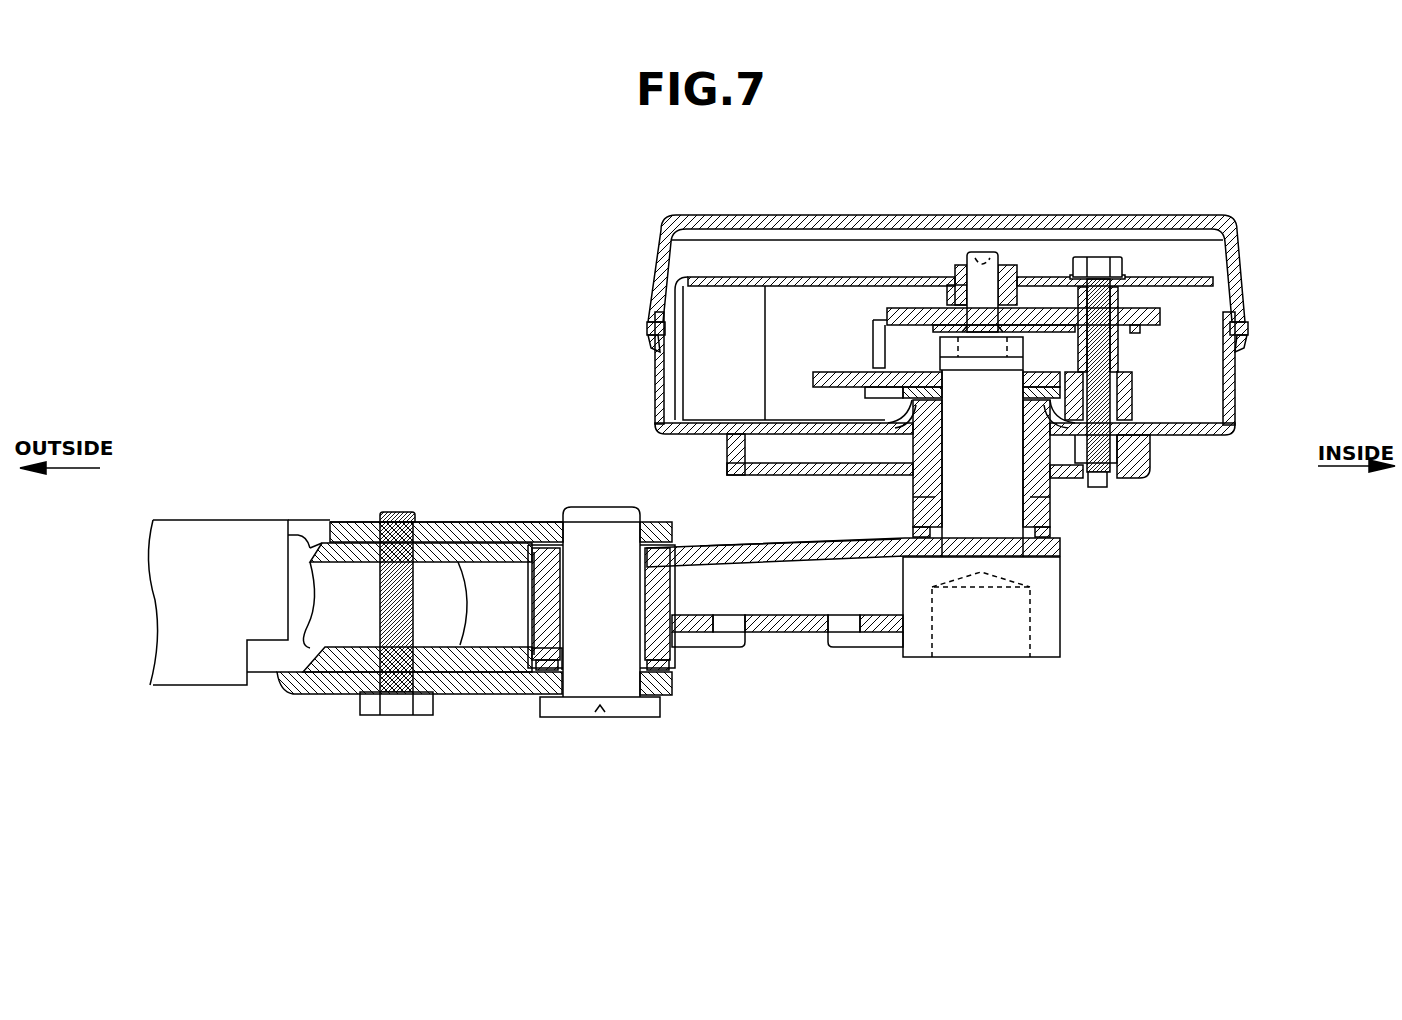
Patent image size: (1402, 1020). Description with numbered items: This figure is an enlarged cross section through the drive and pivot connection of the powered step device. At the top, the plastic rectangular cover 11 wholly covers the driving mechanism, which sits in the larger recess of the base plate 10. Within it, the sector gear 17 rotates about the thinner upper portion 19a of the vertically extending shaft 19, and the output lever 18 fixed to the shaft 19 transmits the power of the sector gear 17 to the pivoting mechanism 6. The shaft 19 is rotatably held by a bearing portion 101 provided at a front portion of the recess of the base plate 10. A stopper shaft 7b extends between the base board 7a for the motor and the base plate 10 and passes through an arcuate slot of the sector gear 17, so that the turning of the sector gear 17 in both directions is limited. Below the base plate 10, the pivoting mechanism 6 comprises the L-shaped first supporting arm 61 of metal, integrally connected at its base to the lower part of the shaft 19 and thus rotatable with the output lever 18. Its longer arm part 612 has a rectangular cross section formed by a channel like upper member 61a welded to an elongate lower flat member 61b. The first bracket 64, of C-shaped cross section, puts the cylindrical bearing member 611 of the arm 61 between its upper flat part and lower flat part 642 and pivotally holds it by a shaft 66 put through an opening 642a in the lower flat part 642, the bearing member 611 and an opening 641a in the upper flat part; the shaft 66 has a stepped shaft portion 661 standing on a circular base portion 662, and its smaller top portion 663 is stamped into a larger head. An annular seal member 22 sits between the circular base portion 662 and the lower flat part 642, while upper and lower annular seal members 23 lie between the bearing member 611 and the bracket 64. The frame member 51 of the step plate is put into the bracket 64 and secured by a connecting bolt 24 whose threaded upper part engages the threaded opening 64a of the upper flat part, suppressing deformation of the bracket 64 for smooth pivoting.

The pivoting mechanism 6 is at (616, 460).
The base board 7a is at (1187, 277).
The stopper shaft 7b is at (1118, 352).
The base plate 10 is at (1237, 402).
The plastic rectangular cover 11 is at (1084, 215).
The sector gear 17 is at (905, 308).
The output lever 18 is at (828, 372).
The shaft 19 is at (1052, 497).
The thinner upper portion 19a is at (1020, 277).
The bearing portion 101 is at (1052, 518).
The annular seal member 22 is at (538, 700).
The annular seal members 23 is at (528, 667).
The connecting bolt 24 is at (390, 715).
The frame member 51 is at (347, 690).
The first supporting arm 61 is at (840, 538).
The channel like upper member 61a is at (800, 542).
The elongate lower flat member 61b is at (800, 632).
The first bracket 64 is at (438, 522).
The threaded opening 64a is at (392, 512).
The shaft 66 is at (676, 707).
The cylindrical bearing member 611 is at (532, 622).
The longer arm part 612 is at (728, 548).
The opening 641a is at (623, 522).
The lower flat part 642 is at (450, 690).
The opening 642a is at (632, 683).
The stepped shaft portion 661 is at (557, 583).
The circular base portion 662 is at (640, 703).
The smaller top portion 663 is at (553, 522).